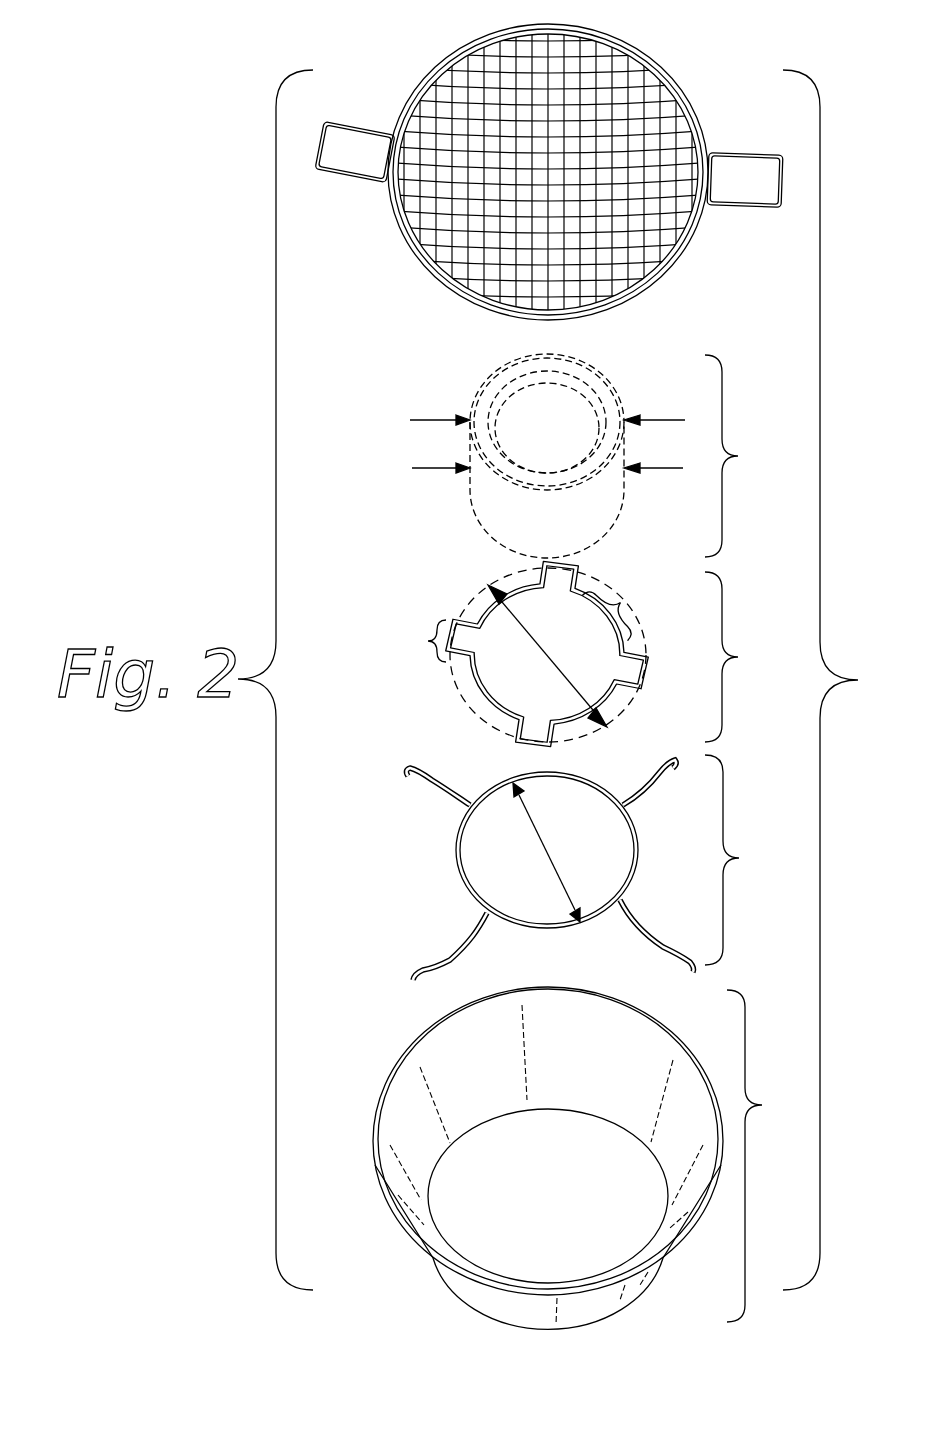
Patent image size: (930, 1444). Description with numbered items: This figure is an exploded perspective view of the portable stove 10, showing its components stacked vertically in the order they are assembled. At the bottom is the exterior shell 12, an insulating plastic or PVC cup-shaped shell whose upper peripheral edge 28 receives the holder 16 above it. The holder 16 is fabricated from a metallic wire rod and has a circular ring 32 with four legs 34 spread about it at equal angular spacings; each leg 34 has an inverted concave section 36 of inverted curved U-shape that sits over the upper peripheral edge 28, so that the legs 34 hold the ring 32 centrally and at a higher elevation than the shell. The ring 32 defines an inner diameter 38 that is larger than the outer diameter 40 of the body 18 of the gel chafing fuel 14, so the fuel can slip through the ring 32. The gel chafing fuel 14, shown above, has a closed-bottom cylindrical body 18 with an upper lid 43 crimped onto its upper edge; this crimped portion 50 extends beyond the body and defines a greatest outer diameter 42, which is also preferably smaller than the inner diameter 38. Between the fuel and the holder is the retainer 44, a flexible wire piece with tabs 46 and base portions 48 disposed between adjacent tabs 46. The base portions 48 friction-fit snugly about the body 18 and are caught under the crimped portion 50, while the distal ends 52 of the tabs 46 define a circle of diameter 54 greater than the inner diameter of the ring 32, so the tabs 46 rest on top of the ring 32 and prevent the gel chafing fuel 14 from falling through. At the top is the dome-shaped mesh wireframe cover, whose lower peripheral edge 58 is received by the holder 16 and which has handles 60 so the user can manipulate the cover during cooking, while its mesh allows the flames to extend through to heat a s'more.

The portable stove 10 is at (839, 680).
The exterior shell 12 is at (572, 1158).
The gel chafing fuel 14 is at (584, 453).
The holder 16 is at (591, 859).
The body 18 is at (486, 531).
The upper peripheral edge 28 is at (403, 1062).
The ring 32 is at (457, 855).
The legs 34 is at (431, 776).
The inverted concave section 36 is at (683, 970).
The inner diameter 38 is at (544, 850).
The outer diameter 40 is at (420, 470).
The outer diameter 42 is at (421, 419).
The upper lid 43 is at (490, 380).
The retainer 44 is at (575, 653).
The tabs 46 is at (425, 641).
The base portions 48 is at (622, 602).
The crimped portion 50 is at (612, 386).
The distal ends 52 is at (650, 663).
The diameter 54 is at (546, 660).
The lower peripheral edge 58 is at (672, 287).
The handles 60 is at (322, 152).